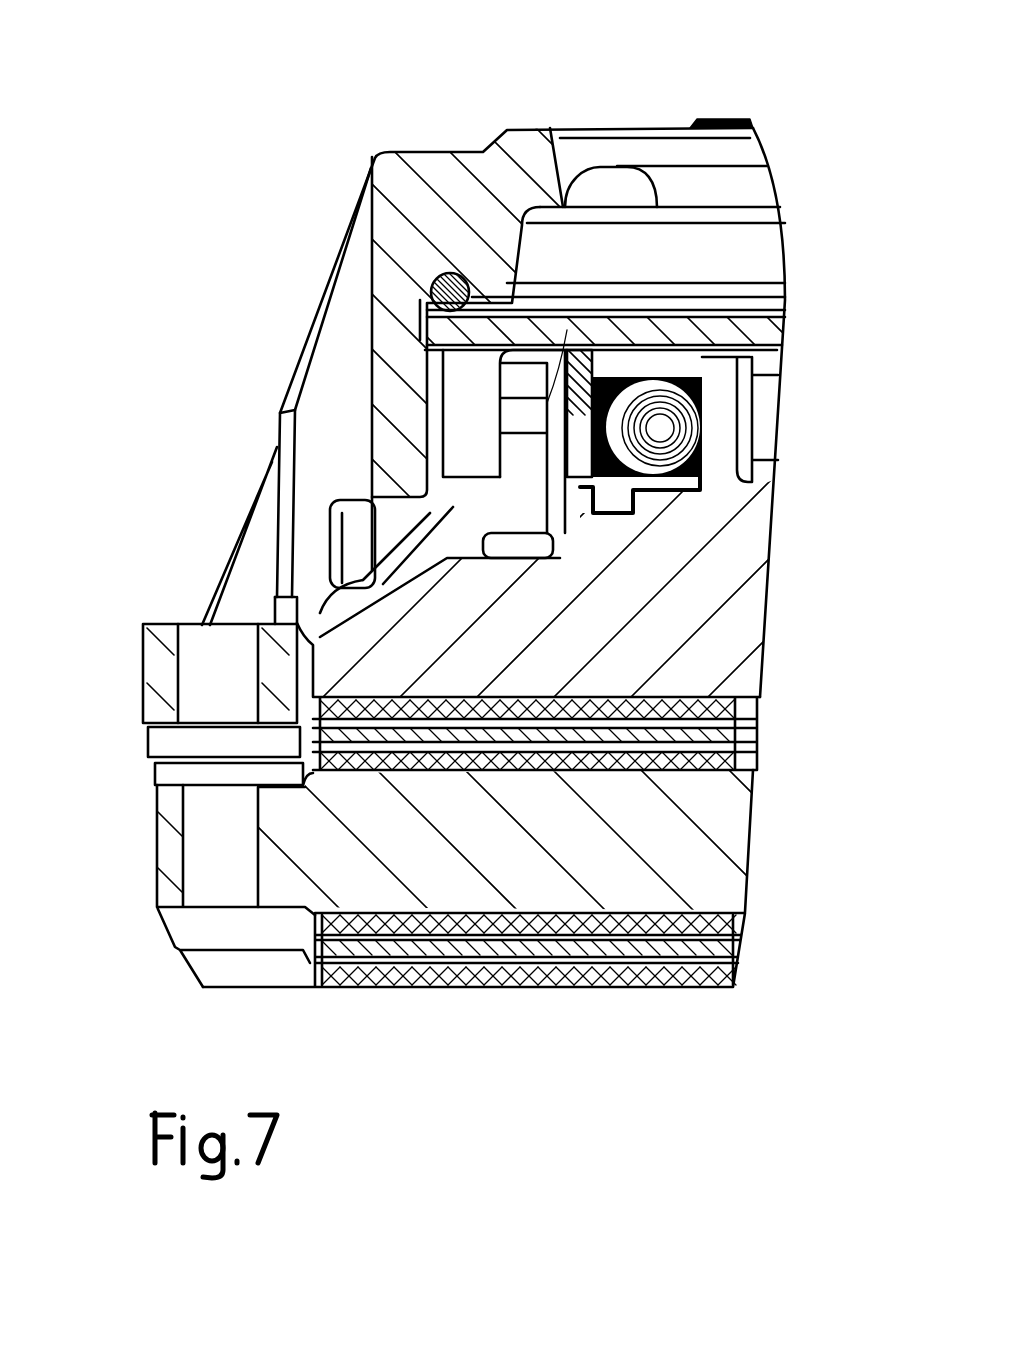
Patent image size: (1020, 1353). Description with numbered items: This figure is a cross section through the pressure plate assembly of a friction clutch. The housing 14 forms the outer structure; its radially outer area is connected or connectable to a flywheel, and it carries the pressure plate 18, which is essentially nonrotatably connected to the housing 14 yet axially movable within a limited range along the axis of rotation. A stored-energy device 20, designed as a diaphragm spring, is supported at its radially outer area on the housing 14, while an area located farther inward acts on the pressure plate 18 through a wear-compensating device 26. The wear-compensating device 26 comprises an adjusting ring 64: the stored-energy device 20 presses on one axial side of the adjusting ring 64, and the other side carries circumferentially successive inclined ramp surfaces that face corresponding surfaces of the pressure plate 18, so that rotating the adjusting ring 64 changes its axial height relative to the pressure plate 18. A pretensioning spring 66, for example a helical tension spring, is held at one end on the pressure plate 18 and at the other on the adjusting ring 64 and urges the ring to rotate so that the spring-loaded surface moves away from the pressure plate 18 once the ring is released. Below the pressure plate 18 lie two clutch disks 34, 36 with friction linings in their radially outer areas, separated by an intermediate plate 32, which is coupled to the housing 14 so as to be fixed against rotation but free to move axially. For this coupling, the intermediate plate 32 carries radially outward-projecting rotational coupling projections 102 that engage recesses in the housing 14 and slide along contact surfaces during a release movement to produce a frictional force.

The housing 14 is at (423, 150).
The pressure plate 18 is at (753, 612).
The stored-energy device 20 is at (742, 308).
The wear-compensating device 26 is at (520, 412).
The intermediate plate 32 is at (728, 838).
The clutch disk 34 is at (756, 700).
The clutch disk 36 is at (738, 950).
The adjusting ring 64 is at (568, 352).
The pretensioning spring 66 is at (624, 398).
The rotational coupling projection 102 is at (160, 850).